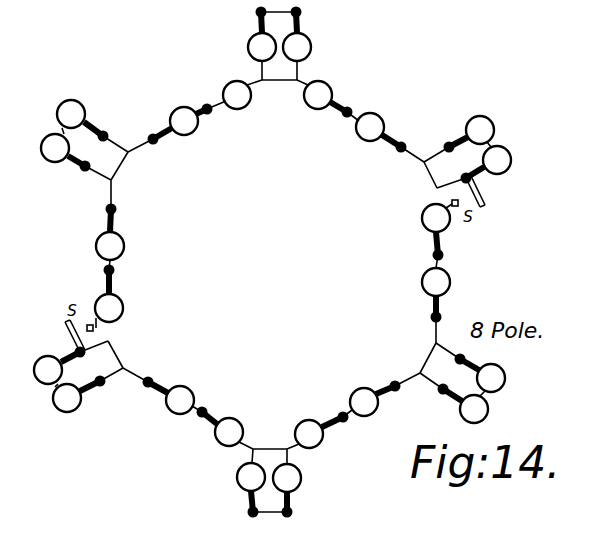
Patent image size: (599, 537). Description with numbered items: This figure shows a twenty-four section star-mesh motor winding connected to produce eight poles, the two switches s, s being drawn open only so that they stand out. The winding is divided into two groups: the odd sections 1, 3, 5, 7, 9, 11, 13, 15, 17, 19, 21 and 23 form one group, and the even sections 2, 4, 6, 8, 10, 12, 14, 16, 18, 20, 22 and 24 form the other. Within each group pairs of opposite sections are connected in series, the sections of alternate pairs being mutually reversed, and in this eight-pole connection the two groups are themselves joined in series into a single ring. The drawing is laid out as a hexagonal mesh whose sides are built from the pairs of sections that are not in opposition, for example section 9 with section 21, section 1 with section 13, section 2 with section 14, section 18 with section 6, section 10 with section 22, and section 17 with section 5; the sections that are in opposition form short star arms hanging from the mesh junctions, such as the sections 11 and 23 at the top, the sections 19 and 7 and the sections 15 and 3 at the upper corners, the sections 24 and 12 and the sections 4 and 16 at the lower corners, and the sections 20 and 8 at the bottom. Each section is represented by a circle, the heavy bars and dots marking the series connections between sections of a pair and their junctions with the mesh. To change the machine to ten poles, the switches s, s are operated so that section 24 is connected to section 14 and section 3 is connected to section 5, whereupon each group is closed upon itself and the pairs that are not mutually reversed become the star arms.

The winding section 1 is at (378, 130).
The winding section 2 is at (436, 292).
The winding section 3 is at (488, 162).
The winding section 4 is at (482, 375).
The winding section 5 is at (109, 296).
The winding section 6 is at (319, 432).
The winding section 7 is at (63, 150).
The winding section 8 is at (287, 488).
The winding section 9 is at (180, 123).
The winding section 10 is at (171, 398).
The winding section 11 is at (262, 36).
The winding section 12 is at (76, 396).
The winding section 13 is at (325, 96).
The winding section 14 is at (436, 229).
The winding section 15 is at (471, 131).
The winding section 16 is at (465, 406).
The winding section 17 is at (110, 234).
The winding section 18 is at (372, 401).
The winding section 19 is at (80, 118).
The winding section 20 is at (251, 487).
The winding section 21 is at (237, 95).
The winding section 22 is at (222, 429).
The winding section 23 is at (297, 36).
The winding section 24 is at (57, 368).